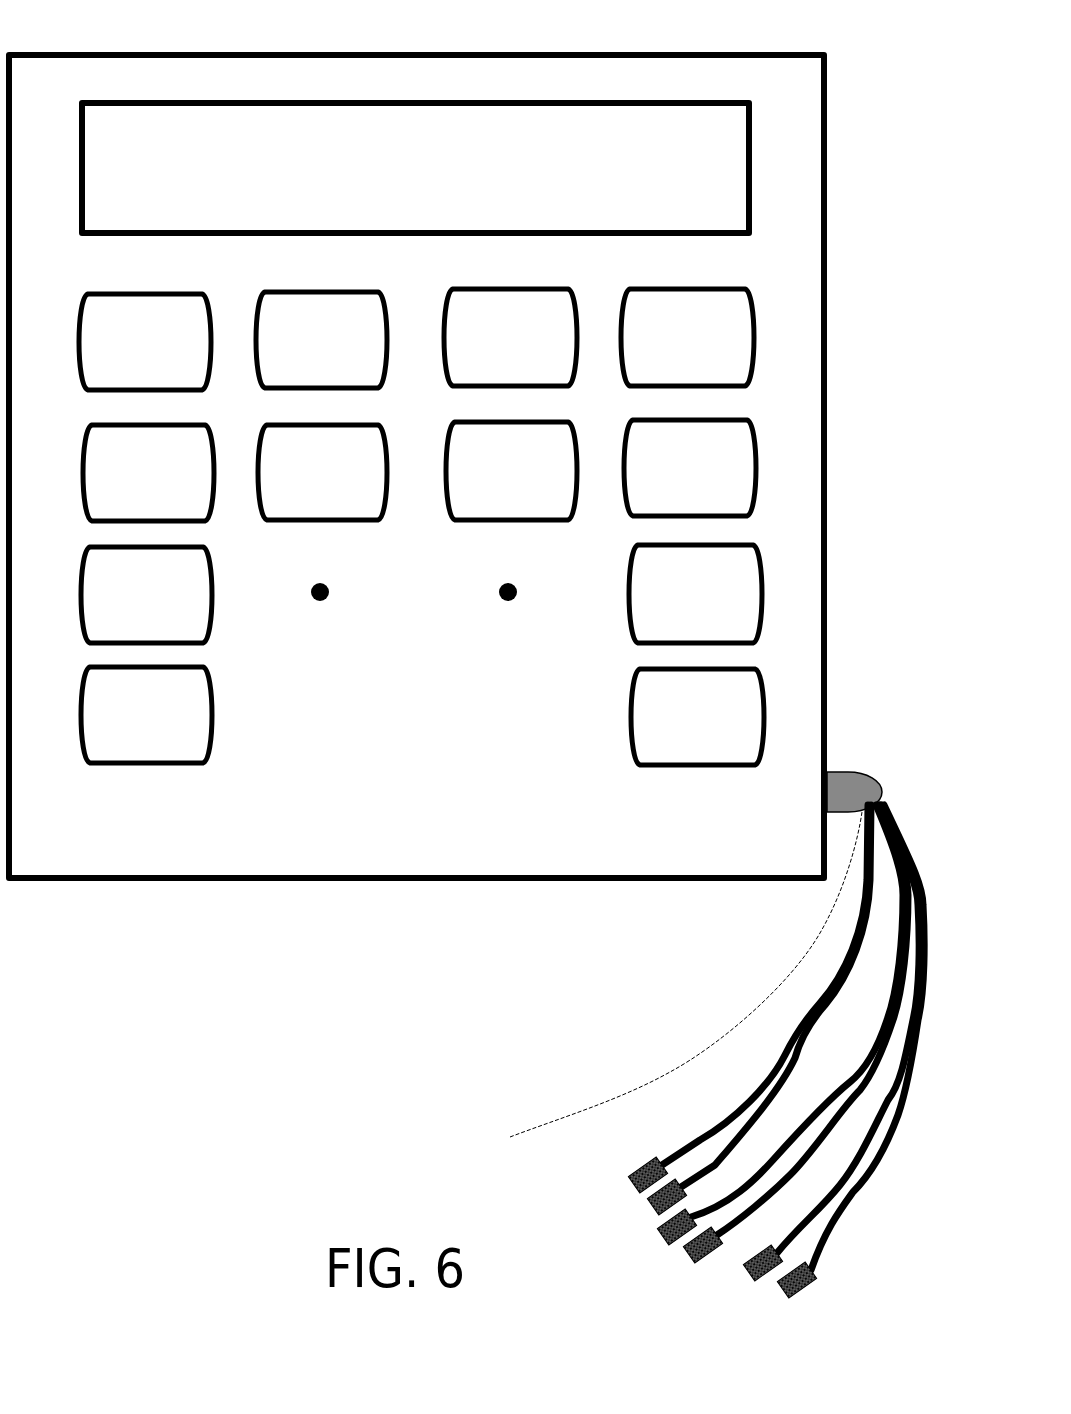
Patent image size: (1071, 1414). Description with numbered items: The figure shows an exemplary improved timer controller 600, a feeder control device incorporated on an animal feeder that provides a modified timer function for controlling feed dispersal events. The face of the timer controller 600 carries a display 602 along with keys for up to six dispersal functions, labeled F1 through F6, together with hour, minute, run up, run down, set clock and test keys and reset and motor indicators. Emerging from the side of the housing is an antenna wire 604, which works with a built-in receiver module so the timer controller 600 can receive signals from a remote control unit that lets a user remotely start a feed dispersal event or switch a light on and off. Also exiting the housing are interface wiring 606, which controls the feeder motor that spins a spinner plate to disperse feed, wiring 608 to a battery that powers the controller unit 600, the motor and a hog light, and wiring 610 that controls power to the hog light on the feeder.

The timer controller 600 is at (125, 1006).
The display 602 is at (697, 118).
The antenna wire 604 is at (558, 1124).
The interface wiring 606 is at (678, 1148).
The wiring 608 is at (660, 1232).
The wiring 610 is at (743, 1273).